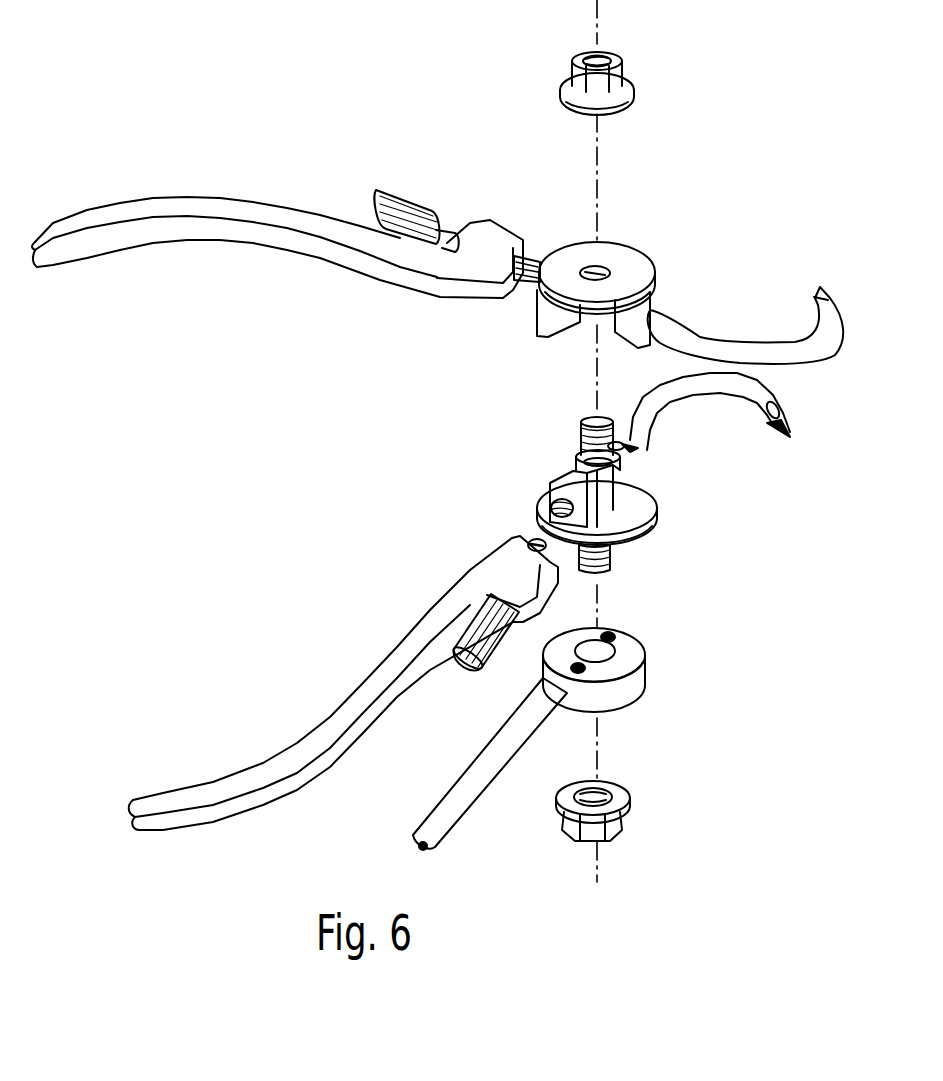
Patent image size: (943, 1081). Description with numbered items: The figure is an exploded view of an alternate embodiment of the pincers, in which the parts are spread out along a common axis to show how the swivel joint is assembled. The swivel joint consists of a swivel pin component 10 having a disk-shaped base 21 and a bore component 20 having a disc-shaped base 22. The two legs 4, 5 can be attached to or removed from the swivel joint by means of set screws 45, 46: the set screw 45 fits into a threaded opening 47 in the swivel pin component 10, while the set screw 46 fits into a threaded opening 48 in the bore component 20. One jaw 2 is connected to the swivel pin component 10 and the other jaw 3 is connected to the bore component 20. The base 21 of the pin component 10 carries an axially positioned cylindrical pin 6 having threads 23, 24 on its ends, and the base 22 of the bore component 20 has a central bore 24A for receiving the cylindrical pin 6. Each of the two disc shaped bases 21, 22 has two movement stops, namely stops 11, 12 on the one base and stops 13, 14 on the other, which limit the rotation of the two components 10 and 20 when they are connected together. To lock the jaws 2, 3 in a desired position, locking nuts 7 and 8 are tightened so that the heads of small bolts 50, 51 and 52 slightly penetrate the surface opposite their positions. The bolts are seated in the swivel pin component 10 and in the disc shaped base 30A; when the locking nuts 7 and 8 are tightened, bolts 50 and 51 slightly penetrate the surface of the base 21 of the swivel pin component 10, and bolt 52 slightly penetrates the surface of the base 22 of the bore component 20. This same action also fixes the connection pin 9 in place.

The jaw 2 is at (758, 396).
The jaw 3 is at (830, 343).
The leg 4 is at (257, 773).
The leg 5 is at (148, 205).
The cylindrical pin 6 is at (610, 549).
The locking nut 7 is at (634, 76).
The locking nut 8 is at (621, 827).
The connection pin 9 is at (468, 797).
The swivel pin component 10 is at (660, 504).
The movement stop 11 is at (636, 463).
The movement stop 12 is at (572, 482).
The movement stop 13 is at (633, 334).
The movement stop 14 is at (557, 326).
The bore component 20 is at (657, 256).
The disk-shaped base 21 is at (637, 532).
The disc-shaped base 22 is at (647, 281).
The threads 23 is at (585, 423).
The threads 24 is at (612, 568).
The central bore 24A is at (607, 272).
The disc shaped base 30A is at (635, 682).
The set screw 45 is at (488, 660).
The set screw 46 is at (420, 200).
The threaded opening 47 is at (552, 511).
The threaded opening 48 is at (544, 258).
The small bolt 50 is at (586, 672).
The small bolt 51 is at (617, 638).
The small bolt 52 is at (645, 451).